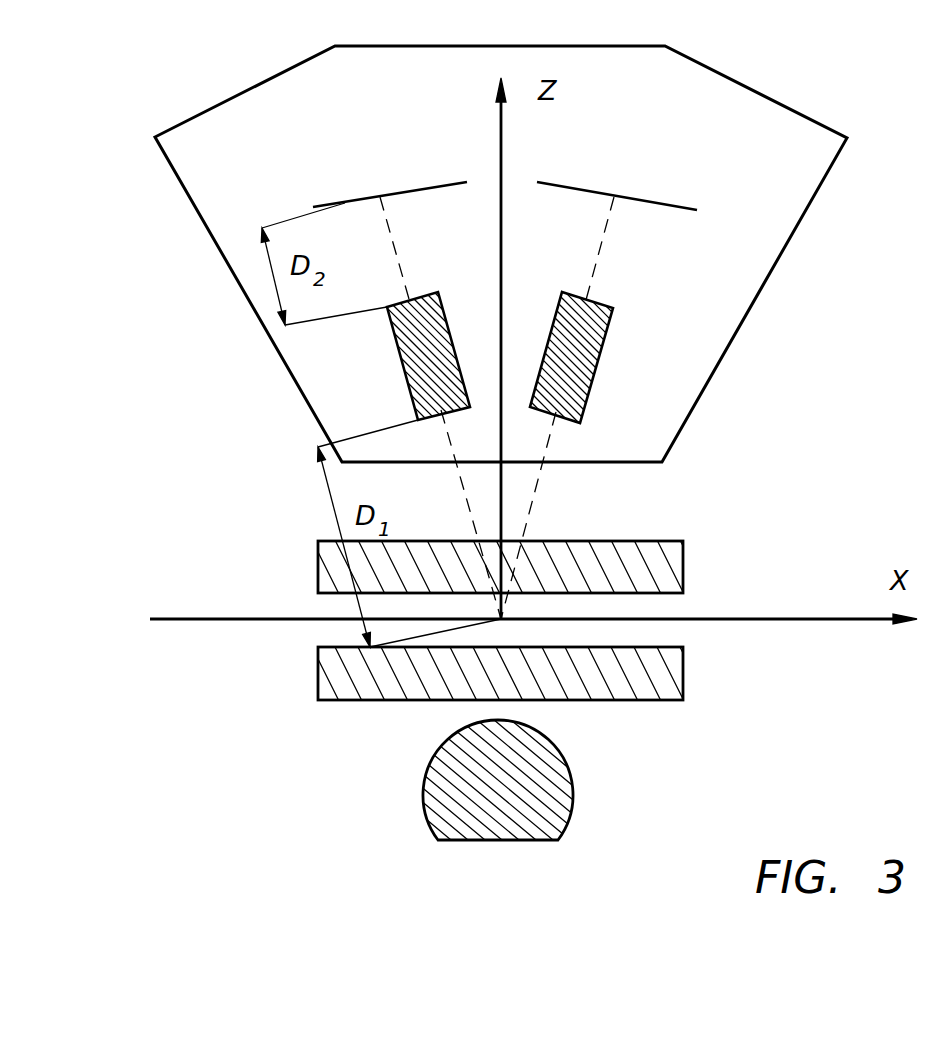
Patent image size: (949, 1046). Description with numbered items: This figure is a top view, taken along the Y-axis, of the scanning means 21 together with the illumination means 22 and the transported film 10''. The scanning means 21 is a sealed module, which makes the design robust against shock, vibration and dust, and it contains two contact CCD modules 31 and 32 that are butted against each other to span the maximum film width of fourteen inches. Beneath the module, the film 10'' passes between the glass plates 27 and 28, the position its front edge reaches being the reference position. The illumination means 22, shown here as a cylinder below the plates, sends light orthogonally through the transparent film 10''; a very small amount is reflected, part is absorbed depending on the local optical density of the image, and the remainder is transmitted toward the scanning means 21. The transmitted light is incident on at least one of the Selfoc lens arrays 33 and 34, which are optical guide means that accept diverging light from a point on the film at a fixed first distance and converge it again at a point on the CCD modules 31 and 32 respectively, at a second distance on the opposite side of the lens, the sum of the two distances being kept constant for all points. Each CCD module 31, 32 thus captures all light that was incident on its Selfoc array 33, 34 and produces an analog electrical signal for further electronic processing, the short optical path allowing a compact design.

The scanning means 21 is at (745, 83).
The contact CCD module 31 is at (378, 197).
The contact CCD module 32 is at (600, 193).
The Selfoc lens array 33 is at (435, 368).
The Selfoc lens array 34 is at (590, 340).
The glass plate 27 is at (333, 562).
The glass plate 28 is at (340, 675).
The illumination means 22 is at (547, 778).
The film 10'' is at (187, 658).